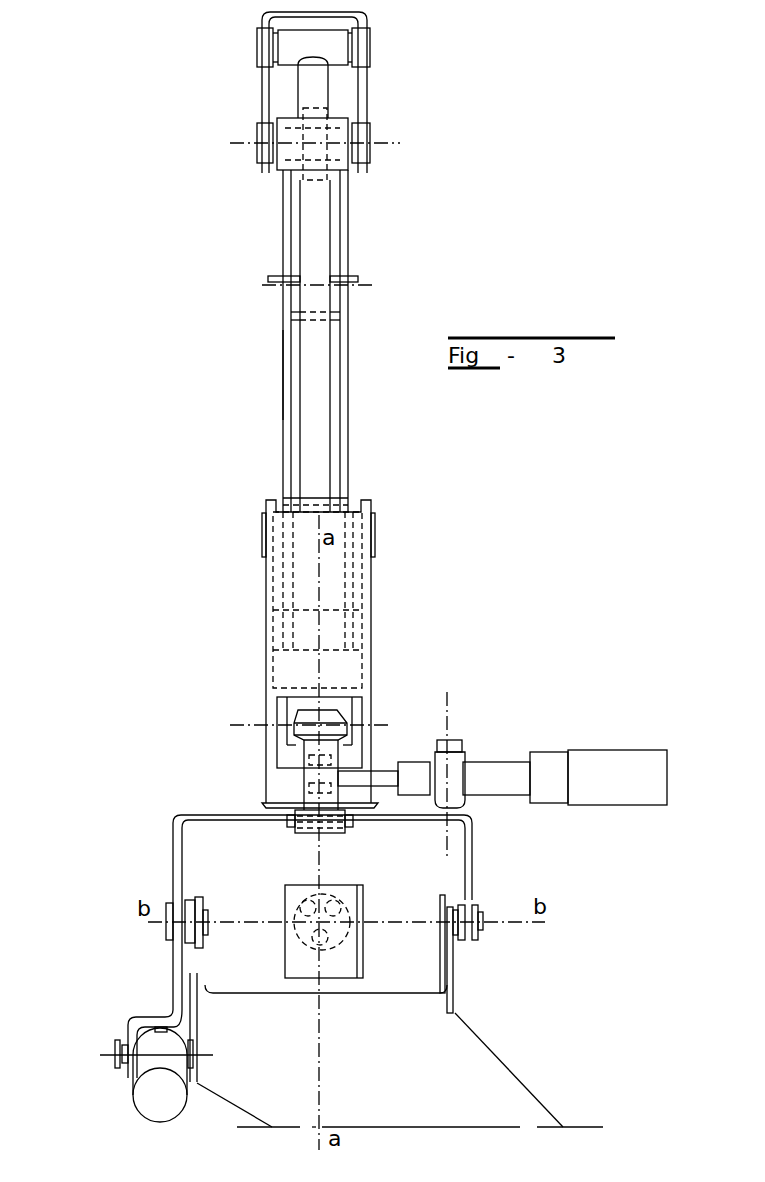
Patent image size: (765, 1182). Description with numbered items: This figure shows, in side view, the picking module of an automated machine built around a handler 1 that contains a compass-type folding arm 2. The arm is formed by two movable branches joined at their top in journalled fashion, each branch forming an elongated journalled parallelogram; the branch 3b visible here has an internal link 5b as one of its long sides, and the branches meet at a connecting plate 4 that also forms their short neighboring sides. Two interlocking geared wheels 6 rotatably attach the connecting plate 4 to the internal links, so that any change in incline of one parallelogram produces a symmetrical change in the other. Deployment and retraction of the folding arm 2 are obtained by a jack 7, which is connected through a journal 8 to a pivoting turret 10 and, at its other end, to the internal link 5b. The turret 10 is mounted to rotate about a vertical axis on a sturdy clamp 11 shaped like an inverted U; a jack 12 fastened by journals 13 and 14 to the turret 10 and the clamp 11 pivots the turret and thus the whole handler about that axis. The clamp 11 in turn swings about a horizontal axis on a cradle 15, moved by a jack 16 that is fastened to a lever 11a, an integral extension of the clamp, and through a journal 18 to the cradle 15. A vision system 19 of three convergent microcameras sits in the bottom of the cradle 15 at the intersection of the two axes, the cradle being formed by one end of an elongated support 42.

The handler 1 is at (388, 421).
The folding arm 2 is at (380, 217).
The folding arm branch 3b is at (250, 358).
The connecting plate 4 is at (365, 14).
The internal link 5b is at (348, 316).
The geared wheels 6 is at (328, 115).
The jack 7 is at (313, 750).
The journal 8 is at (300, 724).
The pivoting turret 10 is at (333, 580).
The clamp 11 is at (473, 872).
The lever 11a is at (173, 968).
The jack 12 is at (493, 770).
The journal 13 is at (358, 752).
The journal 14 is at (449, 734).
The cradle 15 is at (453, 953).
The jack 16 is at (155, 1098).
The journal 18 is at (104, 1062).
The vision system 19 is at (338, 960).
The elongated support 42 is at (478, 1082).